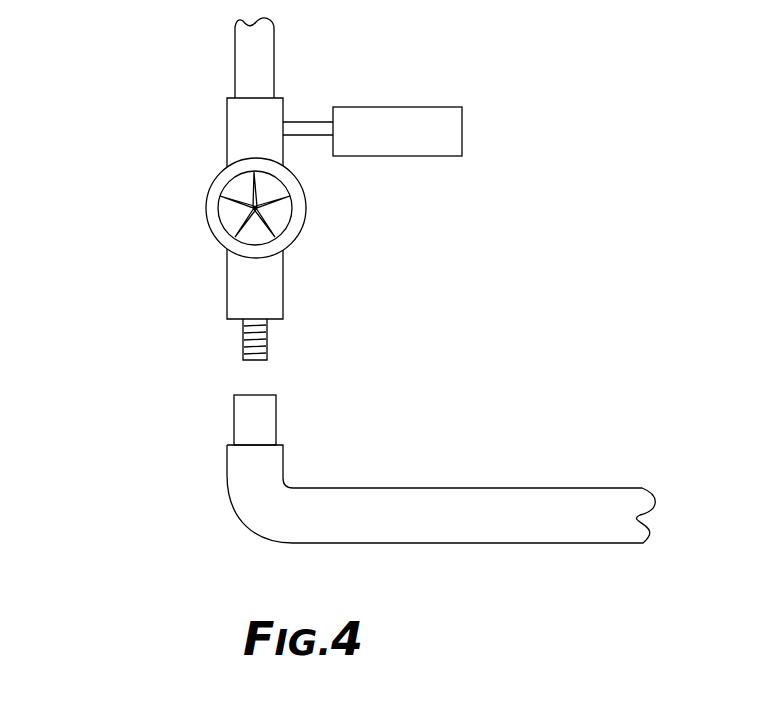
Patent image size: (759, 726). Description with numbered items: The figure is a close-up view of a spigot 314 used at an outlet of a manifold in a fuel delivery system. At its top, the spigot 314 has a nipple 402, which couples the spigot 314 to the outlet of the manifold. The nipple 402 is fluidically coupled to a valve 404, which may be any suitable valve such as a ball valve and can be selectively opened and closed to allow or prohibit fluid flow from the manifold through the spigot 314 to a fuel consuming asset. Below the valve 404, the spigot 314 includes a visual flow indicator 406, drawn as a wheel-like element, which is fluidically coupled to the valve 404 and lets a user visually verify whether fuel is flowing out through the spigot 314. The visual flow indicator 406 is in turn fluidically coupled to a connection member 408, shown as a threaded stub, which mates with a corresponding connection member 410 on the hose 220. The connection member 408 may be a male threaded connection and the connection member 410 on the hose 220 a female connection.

The spigot 314 is at (157, 85).
The nipple 402 is at (297, 40).
The valve 404 is at (478, 130).
The visual flow indicator 406 is at (306, 217).
The connection member 408 is at (267, 342).
The connection member 410 is at (276, 417).
The hose 220 is at (505, 543).